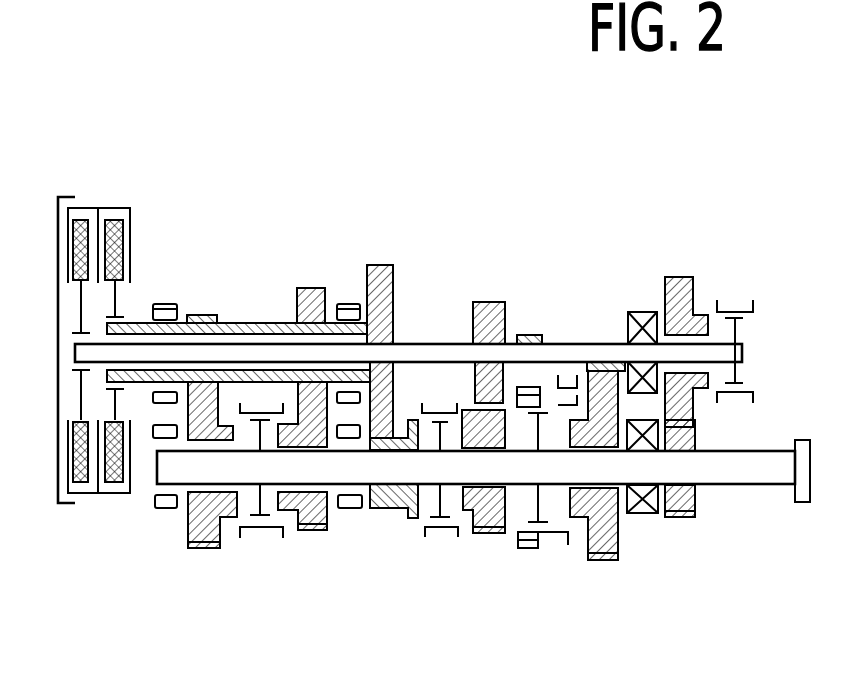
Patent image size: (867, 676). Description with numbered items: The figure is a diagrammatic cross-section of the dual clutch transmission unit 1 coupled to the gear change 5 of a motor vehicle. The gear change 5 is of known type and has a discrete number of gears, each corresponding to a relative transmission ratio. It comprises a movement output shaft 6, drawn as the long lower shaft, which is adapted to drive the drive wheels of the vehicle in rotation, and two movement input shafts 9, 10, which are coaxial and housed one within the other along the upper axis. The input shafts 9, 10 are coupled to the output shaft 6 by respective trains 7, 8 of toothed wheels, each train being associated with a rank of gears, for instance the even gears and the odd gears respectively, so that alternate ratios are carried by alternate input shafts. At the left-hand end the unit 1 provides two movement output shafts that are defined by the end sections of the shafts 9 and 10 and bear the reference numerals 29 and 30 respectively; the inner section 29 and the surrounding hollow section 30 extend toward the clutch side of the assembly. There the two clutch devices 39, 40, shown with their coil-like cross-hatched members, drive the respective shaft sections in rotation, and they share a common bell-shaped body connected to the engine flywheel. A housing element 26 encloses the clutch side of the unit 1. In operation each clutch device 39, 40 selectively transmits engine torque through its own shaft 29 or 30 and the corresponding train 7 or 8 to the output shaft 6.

The dual clutch transmission unit 1 is at (133, 237).
The gear change 5 is at (680, 277).
The movement output shaft 6 is at (752, 472).
The train of toothed wheels 7 is at (620, 537).
The train of toothed wheels 8 is at (330, 533).
The movement input shaft 9 is at (445, 342).
The movement input shaft 10 is at (275, 322).
The housing 26 is at (58, 302).
The movement output shaft of the unit 29 is at (93, 352).
The movement output shaft of the unit 30 is at (115, 323).
The clutch device 39 is at (88, 494).
The clutch device 40 is at (118, 494).